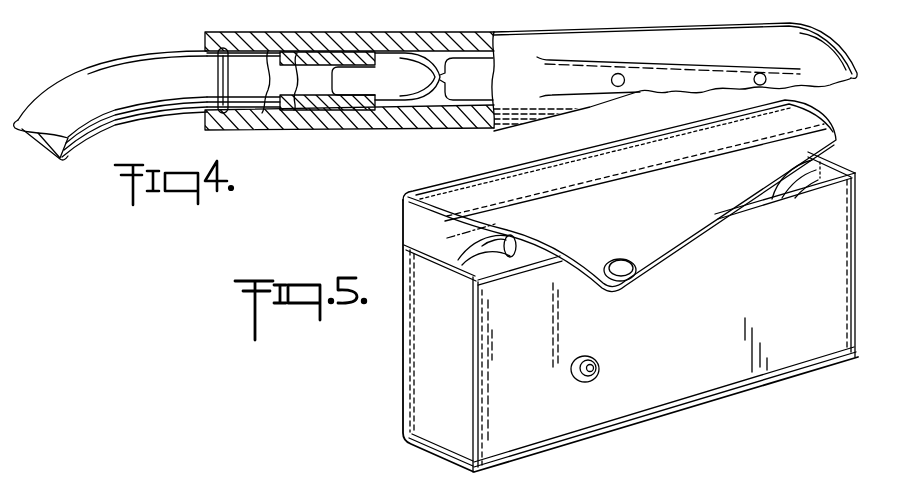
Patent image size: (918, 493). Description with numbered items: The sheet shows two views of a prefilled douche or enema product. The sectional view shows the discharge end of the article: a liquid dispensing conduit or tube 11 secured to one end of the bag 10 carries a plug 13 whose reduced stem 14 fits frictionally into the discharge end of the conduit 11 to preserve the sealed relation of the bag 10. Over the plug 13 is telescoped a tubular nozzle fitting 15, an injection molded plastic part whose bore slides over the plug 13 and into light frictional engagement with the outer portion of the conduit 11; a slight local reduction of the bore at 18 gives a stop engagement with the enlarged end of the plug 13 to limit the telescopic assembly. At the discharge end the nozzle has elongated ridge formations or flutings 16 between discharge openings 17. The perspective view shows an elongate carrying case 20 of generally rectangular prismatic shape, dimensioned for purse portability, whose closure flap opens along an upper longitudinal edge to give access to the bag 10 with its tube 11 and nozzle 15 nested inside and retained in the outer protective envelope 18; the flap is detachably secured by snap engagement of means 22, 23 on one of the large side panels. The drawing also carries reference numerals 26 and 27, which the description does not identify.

In FIG. 5, the bag 10 is at (511, 266).
In FIG. 4, the liquid dispensing conduit 11 is at (37, 88).
In FIG. 5, the liquid dispensing conduit 11 is at (487, 248).
In FIG. 4, the plug 13 is at (394, 95).
In FIG. 4, the reduced stem 14 is at (343, 88).
In FIG. 4, the nozzle fitting 15 is at (495, 133).
In FIG. 5, the nozzle fitting 15 is at (777, 170).
In FIG. 4, the flutings 16 is at (829, 32).
In FIG. 4, the discharge openings 17 is at (757, 87).
In FIG. 5, the outer protective sealed envelope 18 is at (455, 236).
In FIG. 5, the carrying case 20 is at (401, 376).
In FIG. 5, the snap engagement means 22 is at (618, 259).
In FIG. 5, the snap engagement means 23 is at (600, 368).
In FIG. 4, the broken-away section 26 is at (262, 113).
In FIG. 4, the pin 27 is at (216, 68).